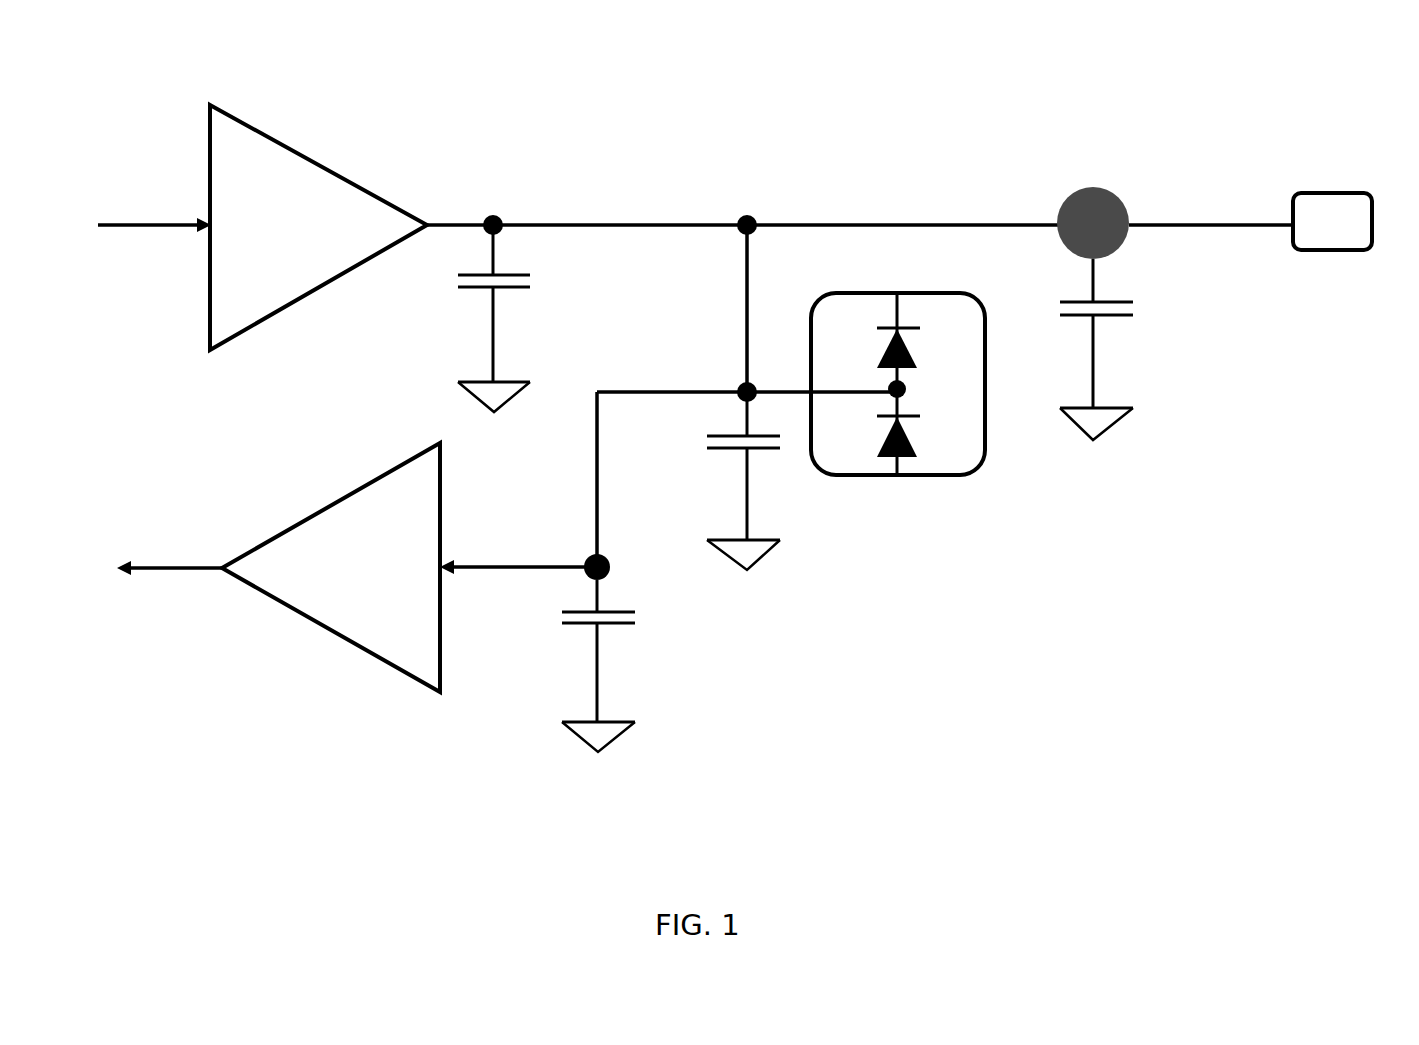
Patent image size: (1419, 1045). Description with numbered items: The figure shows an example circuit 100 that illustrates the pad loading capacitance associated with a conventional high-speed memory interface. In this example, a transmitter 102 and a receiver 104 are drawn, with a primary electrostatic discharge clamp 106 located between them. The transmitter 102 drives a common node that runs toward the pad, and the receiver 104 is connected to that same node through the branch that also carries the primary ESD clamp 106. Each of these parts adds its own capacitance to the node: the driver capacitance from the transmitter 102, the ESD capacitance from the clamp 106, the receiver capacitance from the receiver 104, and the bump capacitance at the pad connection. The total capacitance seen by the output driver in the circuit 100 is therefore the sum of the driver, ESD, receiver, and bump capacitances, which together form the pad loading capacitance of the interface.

The circuit 100 is at (1106, 63).
The transmitter 102 is at (270, 266).
The receiver 104 is at (343, 601).
The primary electrostatic discharge (ESD) clamp 106 is at (857, 354).